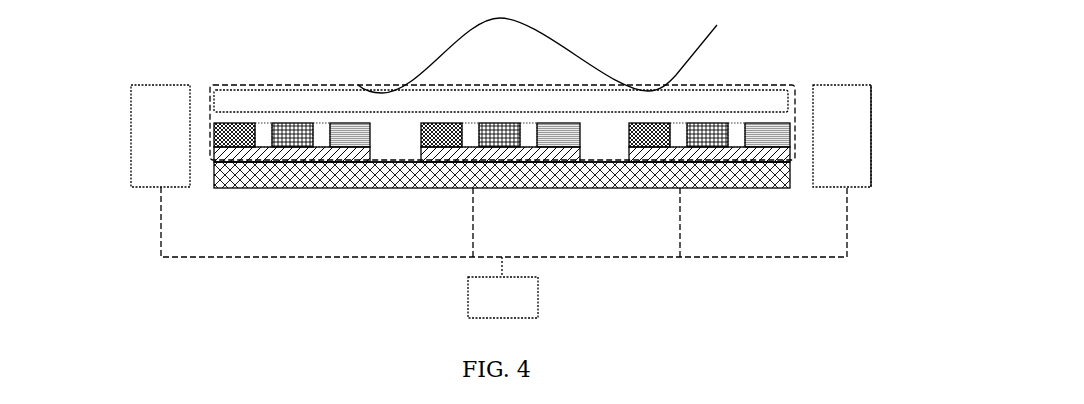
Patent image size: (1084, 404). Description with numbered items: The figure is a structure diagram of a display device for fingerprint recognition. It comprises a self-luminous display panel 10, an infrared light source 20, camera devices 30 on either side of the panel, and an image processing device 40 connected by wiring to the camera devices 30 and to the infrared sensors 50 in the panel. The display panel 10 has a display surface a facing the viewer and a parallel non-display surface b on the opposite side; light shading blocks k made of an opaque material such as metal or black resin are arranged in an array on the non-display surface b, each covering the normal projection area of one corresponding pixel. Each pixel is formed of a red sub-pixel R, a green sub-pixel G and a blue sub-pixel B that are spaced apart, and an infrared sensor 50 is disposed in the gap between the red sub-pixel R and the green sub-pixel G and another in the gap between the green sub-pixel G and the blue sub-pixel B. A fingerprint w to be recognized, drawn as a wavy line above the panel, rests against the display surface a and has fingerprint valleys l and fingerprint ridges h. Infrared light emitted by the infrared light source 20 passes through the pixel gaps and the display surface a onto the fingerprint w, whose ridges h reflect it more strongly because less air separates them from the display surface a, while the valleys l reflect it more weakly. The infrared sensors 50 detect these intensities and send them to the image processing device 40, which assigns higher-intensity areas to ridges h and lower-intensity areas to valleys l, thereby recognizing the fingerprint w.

The display panel 10 is at (712, 83).
The infrared light source 20 is at (740, 182).
The camera device 30 is at (153, 115).
The image processing device 40 is at (504, 252).
The infrared sensor 50 is at (263, 147).
The display surface a is at (262, 94).
The non-display surface b is at (524, 163).
The light shading block k is at (364, 162).
The fingerprint to be recognized w is at (358, 85).
The fingerprint valley l is at (499, 35).
The fingerprint ridge h is at (515, 73).
The red sub-pixel R is at (233, 147).
The green sub-pixel G is at (293, 125).
The blue sub-pixel B is at (350, 147).